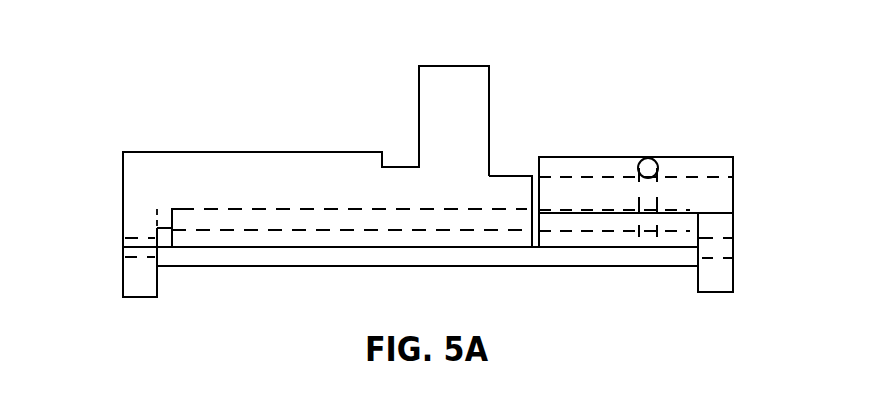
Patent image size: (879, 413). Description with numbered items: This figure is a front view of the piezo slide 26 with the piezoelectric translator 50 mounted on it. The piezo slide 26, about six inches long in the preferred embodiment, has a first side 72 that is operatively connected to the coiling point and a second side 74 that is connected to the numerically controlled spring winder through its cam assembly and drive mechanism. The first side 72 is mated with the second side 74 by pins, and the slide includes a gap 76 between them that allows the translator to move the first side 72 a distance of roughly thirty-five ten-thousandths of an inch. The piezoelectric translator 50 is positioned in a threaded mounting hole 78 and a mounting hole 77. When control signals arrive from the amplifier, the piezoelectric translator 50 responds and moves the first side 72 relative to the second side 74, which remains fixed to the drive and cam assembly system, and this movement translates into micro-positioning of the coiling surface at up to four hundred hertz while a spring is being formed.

The piezo slide 26 is at (200, 47).
The first side 72 is at (192, 152).
The second side 74 is at (678, 157).
The gap 76 is at (533, 175).
The mounting hole 77 is at (735, 254).
The threaded mounting hole 78 is at (123, 252).
The piezoelectric translator 50 is at (310, 266).